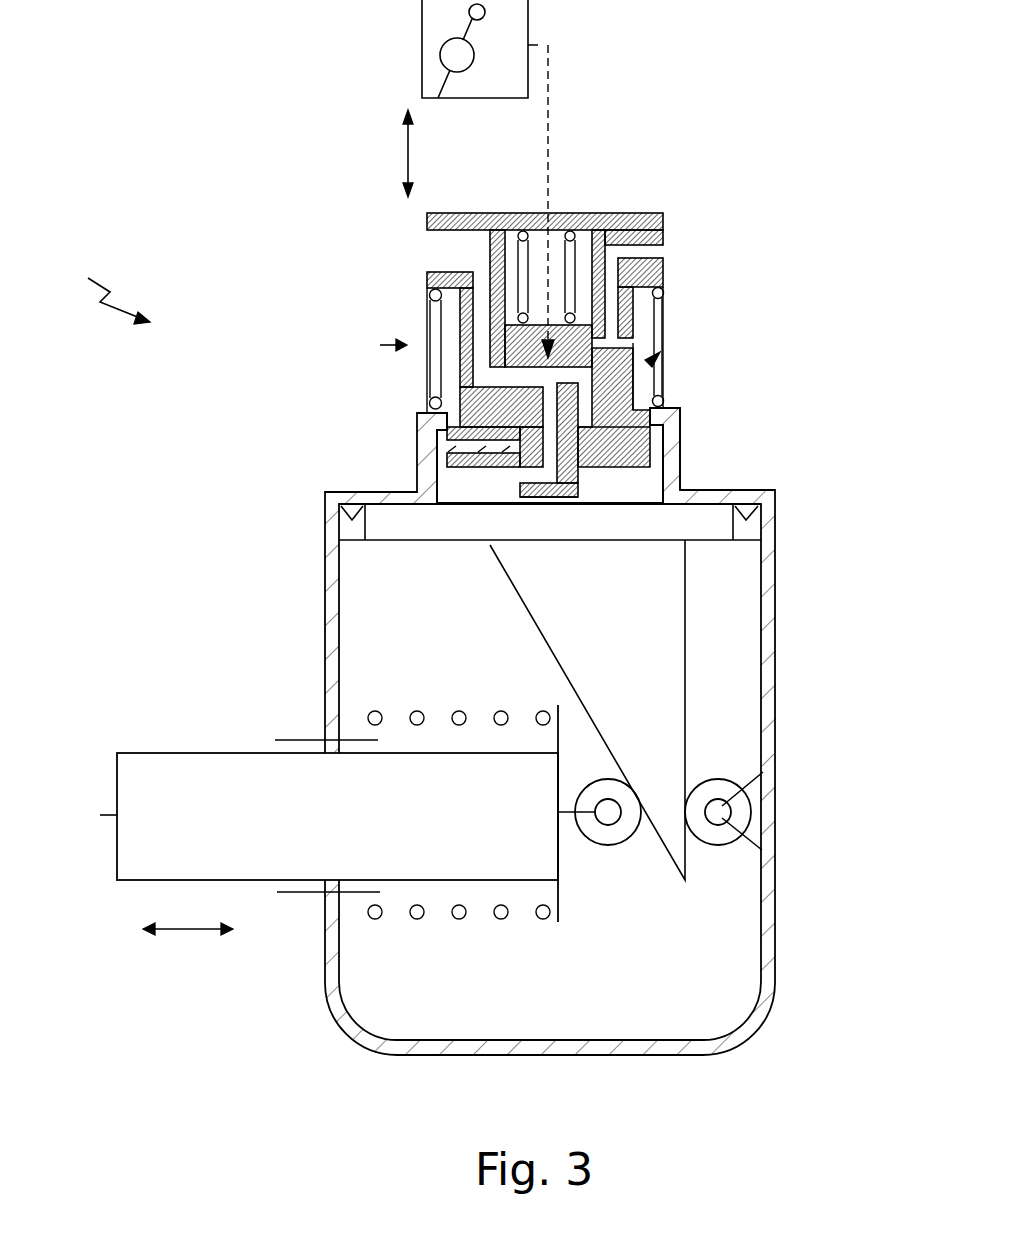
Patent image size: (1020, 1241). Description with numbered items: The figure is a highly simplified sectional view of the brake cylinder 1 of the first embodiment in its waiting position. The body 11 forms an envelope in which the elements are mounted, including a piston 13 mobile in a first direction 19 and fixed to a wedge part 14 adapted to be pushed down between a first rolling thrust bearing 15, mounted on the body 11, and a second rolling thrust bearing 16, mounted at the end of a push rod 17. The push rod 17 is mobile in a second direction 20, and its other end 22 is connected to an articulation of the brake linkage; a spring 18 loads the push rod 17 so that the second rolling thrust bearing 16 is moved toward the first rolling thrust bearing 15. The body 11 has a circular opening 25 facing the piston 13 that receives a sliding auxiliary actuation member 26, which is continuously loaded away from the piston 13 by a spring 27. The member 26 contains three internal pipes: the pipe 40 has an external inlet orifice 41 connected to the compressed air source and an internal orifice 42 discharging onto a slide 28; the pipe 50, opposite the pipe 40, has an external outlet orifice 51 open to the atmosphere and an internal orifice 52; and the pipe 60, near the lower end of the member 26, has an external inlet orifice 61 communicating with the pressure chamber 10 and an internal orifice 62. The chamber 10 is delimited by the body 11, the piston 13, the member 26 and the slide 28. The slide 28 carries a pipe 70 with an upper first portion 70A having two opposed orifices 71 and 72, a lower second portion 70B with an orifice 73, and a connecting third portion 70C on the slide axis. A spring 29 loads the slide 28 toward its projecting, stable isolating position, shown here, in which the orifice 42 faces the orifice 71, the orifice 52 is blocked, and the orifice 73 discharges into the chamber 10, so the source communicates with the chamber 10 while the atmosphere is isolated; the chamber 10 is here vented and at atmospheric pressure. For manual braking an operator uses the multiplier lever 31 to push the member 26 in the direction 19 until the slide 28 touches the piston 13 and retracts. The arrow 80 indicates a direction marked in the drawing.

The brake cylinder 1 is at (106, 283).
The pressure chamber 10 is at (650, 478).
The body 11 is at (775, 832).
The piston 13 is at (510, 530).
The wedge part 14 is at (587, 710).
The first rolling thrust bearing 15 is at (718, 845).
The second rolling thrust bearing 16 is at (607, 845).
The push rod 17 is at (337, 813).
The spring 18 is at (375, 912).
The first direction 19 is at (406, 150).
The second direction 20 is at (175, 935).
The other end of the push rod 22 is at (100, 815).
The circular opening 25 is at (650, 355).
The auxiliary actuation member 26 is at (450, 212).
The spring 27 is at (665, 303).
The slide 28 is at (548, 300).
The spring 29 is at (540, 212).
The multiplier lever 31 is at (440, 62).
The pipe 40 is at (500, 212).
The external inlet orifice 41 is at (437, 253).
The internal orifice 42 is at (497, 355).
The pipe 50 is at (640, 213).
The external outlet orifice 51 is at (660, 248).
The internal orifice 52 is at (598, 345).
The pipe 60 is at (486, 446).
The external inlet orifice 61 is at (456, 446).
The internal orifice 62 is at (510, 446).
The pipe 70 is at (562, 315).
The upper first portion 70A is at (645, 400).
The lower second portion 70B is at (590, 512).
The connecting third portion 70C is at (647, 428).
The orifice 71 is at (462, 388).
The orifice 72 is at (641, 375).
The orifice 73 is at (452, 440).
The flow direction 80 is at (356, 333).